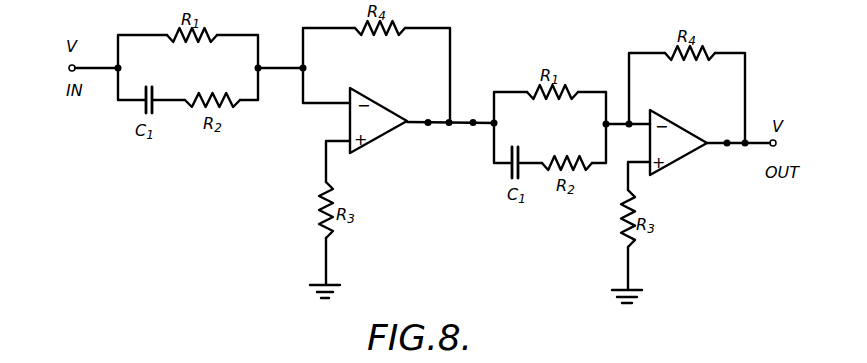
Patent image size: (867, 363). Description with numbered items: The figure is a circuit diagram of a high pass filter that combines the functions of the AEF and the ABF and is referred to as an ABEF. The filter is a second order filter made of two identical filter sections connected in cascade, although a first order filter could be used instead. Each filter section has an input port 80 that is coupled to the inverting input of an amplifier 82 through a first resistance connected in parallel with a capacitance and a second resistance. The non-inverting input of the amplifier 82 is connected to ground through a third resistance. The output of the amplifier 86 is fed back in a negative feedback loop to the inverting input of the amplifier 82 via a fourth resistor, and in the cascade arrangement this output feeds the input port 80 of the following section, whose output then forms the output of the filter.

The input port 80 is at (75, 65).
The amplifier 82 is at (380, 134).
The output of the amplifier 86 is at (427, 119).